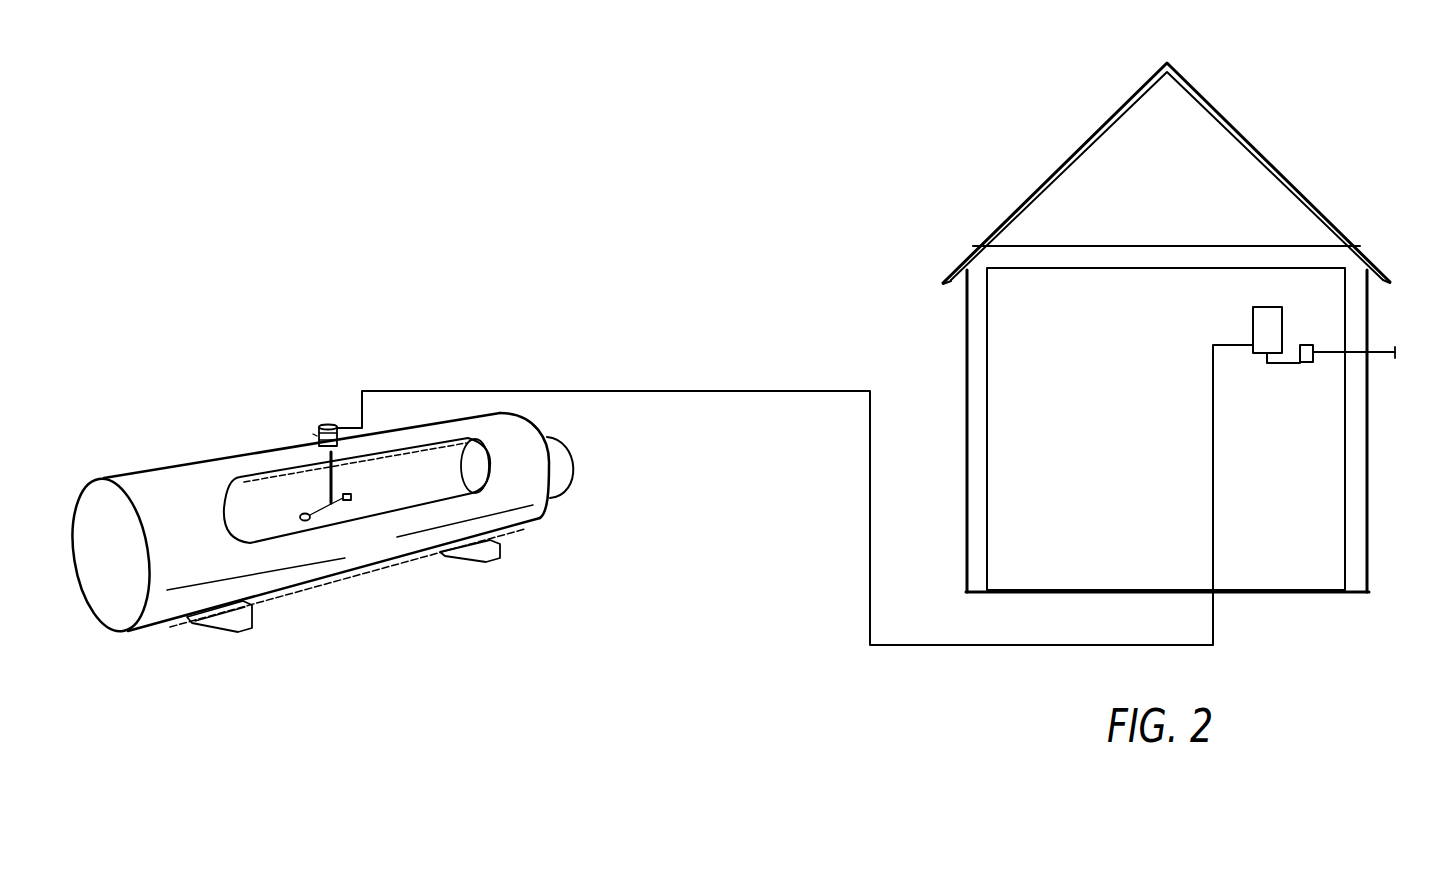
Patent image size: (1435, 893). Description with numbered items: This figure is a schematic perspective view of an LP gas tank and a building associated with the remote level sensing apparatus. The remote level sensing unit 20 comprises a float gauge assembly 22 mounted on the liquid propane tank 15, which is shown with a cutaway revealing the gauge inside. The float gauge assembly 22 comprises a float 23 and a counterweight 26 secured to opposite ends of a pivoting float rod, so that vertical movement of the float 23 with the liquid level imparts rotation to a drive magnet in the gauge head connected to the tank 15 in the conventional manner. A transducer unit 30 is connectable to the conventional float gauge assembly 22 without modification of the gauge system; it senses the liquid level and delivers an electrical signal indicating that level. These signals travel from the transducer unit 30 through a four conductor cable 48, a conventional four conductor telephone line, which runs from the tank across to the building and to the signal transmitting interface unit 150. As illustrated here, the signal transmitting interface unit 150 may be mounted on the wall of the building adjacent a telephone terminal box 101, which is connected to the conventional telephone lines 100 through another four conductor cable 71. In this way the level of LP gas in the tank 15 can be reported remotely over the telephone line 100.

The liquid propane tank 15 is at (168, 480).
The remote level sensing unit 20 is at (330, 422).
The float gauge assembly 22 is at (338, 514).
The float 23 is at (302, 513).
The counterweight 26 is at (350, 493).
The transducer unit 30 is at (310, 433).
The four conductor cable 48 is at (639, 390).
The four conductor cable 71 is at (1293, 365).
The telephone line 100 is at (1380, 353).
The telephone terminal box 101 is at (1316, 314).
The signal transmitting interface unit 150 is at (1263, 323).